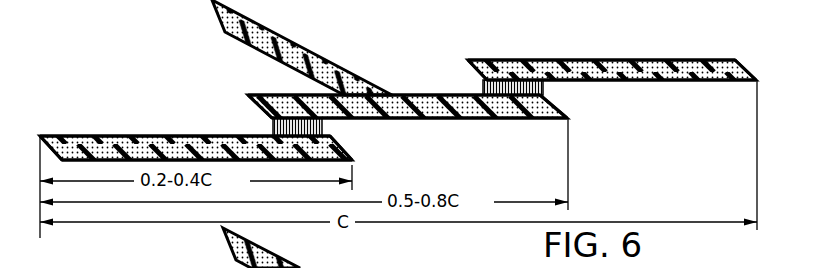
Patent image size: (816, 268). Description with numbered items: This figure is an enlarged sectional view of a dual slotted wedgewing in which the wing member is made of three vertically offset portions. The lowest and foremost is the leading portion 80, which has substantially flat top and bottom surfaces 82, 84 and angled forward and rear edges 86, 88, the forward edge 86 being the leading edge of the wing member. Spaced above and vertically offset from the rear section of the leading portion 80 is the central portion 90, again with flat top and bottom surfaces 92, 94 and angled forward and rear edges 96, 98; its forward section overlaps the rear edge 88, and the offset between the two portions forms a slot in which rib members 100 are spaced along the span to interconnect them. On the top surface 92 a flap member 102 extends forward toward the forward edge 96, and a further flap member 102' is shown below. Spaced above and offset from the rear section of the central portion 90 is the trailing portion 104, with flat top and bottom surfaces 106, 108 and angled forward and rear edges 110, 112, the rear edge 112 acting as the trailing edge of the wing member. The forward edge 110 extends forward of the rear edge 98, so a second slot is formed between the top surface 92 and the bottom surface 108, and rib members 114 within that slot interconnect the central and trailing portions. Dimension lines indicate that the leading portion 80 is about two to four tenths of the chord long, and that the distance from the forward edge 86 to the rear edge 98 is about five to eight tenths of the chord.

The leading portion 80 is at (130, 128).
The top surface of leading portion 82 is at (203, 134).
The bottom surface of leading portion 84 is at (107, 162).
The forward edge of leading portion 86 is at (46, 139).
The rear edge of leading portion 88 is at (341, 148).
The central portion 90 is at (392, 86).
The top surface of central portion 92 is at (447, 94).
The bottom surface of central portion 94 is at (525, 119).
The forward edge of central portion 96 is at (258, 108).
The rear edge of central portion 98 is at (568, 112).
The rib members 100 is at (322, 127).
The flap member 102 is at (302, 47).
The inclined plate (lower) 102' is at (304, 248).
The trailing portion 104 is at (547, 50).
The top surface of trailing portion 106 is at (632, 59).
The bottom surface of trailing portion 108 is at (688, 81).
The forward edge of trailing portion 110 is at (469, 64).
The rear edge of trailing portion 112 is at (738, 59).
The rib members 114 is at (545, 87).